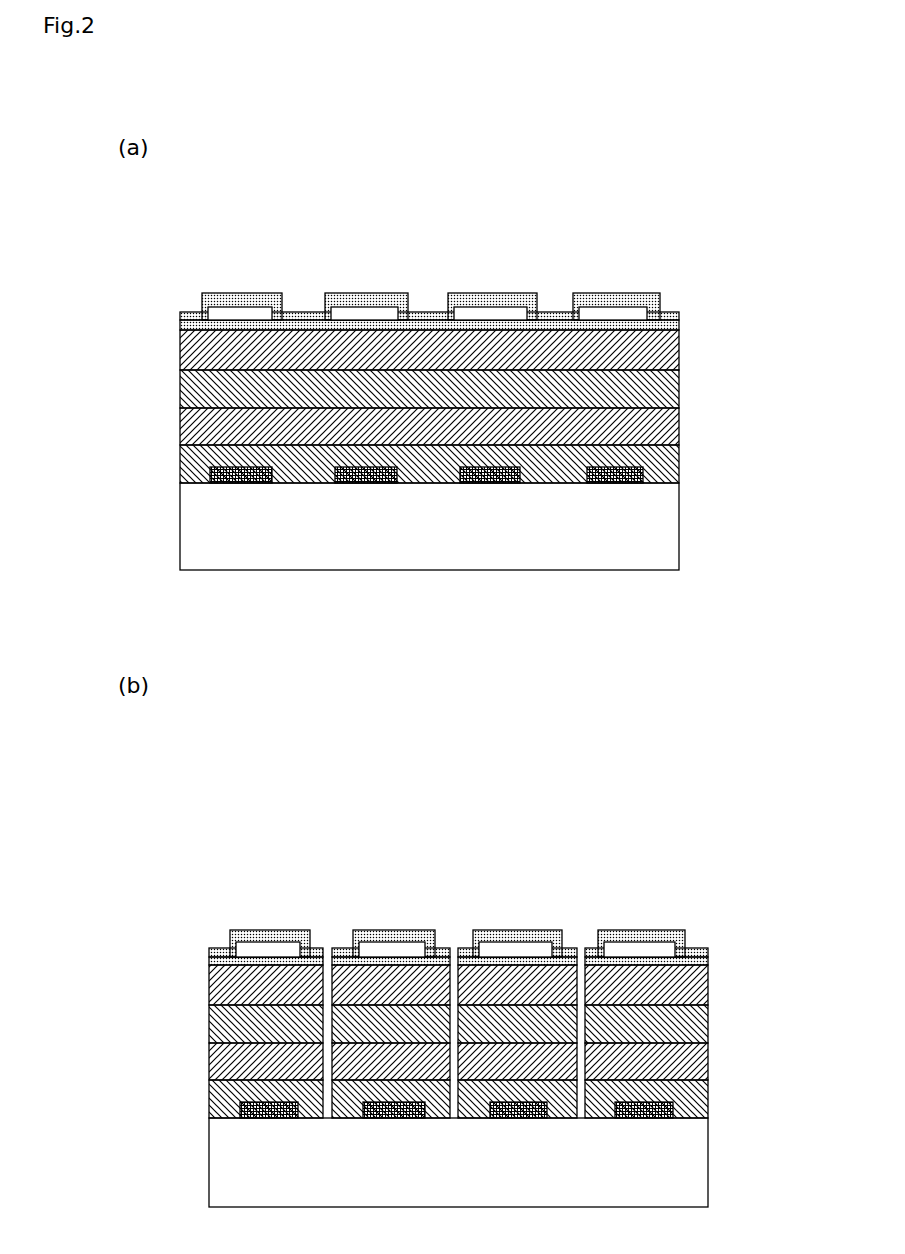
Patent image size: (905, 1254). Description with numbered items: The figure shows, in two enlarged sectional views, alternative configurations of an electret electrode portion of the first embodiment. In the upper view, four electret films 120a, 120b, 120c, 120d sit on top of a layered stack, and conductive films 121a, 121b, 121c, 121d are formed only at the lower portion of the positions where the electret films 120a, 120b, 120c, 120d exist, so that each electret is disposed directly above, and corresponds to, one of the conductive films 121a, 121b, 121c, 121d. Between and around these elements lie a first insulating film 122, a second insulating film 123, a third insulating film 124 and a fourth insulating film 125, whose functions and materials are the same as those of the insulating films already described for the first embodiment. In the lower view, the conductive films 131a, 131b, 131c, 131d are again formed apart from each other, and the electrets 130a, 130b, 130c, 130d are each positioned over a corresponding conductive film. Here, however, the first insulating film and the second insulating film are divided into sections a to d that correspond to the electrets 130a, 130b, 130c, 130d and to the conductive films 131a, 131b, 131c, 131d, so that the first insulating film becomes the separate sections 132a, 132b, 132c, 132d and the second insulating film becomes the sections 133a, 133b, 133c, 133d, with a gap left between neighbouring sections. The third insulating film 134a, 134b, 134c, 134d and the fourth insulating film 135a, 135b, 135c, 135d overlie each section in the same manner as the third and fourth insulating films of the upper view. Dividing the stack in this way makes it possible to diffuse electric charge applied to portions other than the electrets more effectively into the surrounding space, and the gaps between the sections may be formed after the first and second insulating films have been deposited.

The electret film 120a is at (247, 293).
The electret film 120b is at (368, 293).
The electret film 120c is at (493, 293).
The electret film 120d is at (607, 293).
The conductive film 121a is at (242, 485).
The conductive film 121b is at (364, 485).
The conductive film 121c is at (488, 485).
The conductive film 121d is at (614, 485).
The first insulating film 122 is at (681, 445).
The second insulating film 123 is at (681, 407).
The third insulating film 124 is at (683, 332).
The fourth insulating film 125 is at (647, 294).
The electret 130a is at (272, 930).
The electret 130b is at (385, 930).
The electret 130c is at (533, 930).
The electret 130d is at (647, 930).
The conductive film 131a is at (275, 1121).
The conductive film 131b is at (397, 1121).
The conductive film 131c is at (517, 1121).
The conductive film 131d is at (645, 1121).
The first insulating film section 132a is at (208, 1100).
The first insulating film section 132b is at (344, 1122).
The first insulating film section 132c is at (466, 1122).
The first insulating film section 132d is at (708, 1083).
The second insulating film section 133a is at (208, 1043).
The second insulating film section 133b is at (352, 1000).
The second insulating film section 133c is at (528, 1000).
The second insulating film section 133d is at (708, 1043).
The third insulating film 134a is at (207, 965).
The third insulating film 134b is at (437, 950).
The third insulating film 134c is at (563, 950).
The third insulating film 134d is at (693, 963).
The fourth insulating film 135a is at (230, 937).
The fourth insulating film 135b is at (417, 933).
The fourth insulating film 135c is at (547, 937).
The fourth insulating film 135d is at (668, 933).